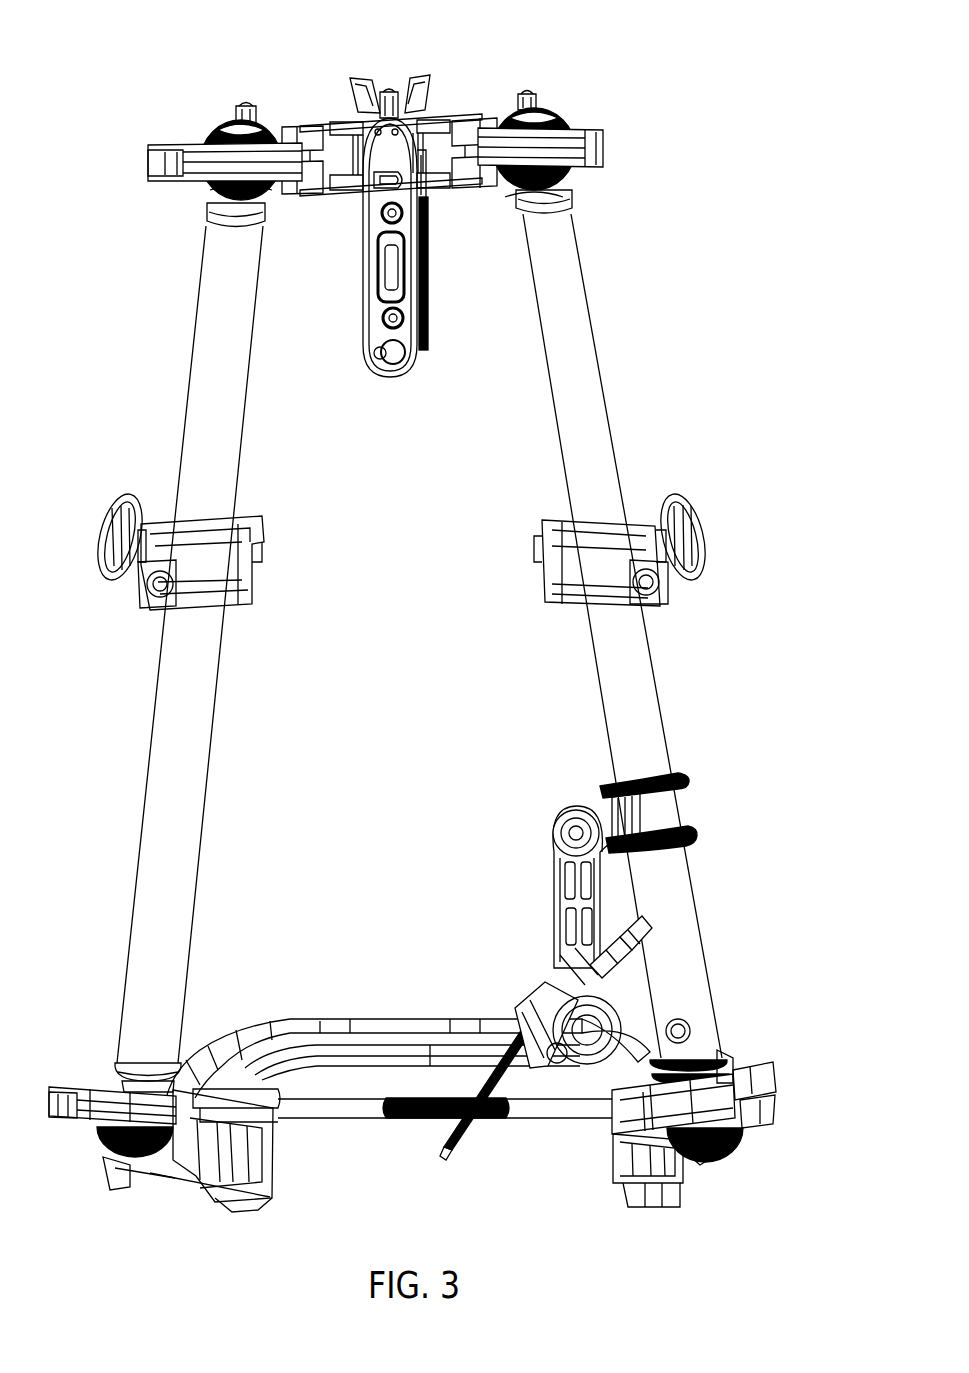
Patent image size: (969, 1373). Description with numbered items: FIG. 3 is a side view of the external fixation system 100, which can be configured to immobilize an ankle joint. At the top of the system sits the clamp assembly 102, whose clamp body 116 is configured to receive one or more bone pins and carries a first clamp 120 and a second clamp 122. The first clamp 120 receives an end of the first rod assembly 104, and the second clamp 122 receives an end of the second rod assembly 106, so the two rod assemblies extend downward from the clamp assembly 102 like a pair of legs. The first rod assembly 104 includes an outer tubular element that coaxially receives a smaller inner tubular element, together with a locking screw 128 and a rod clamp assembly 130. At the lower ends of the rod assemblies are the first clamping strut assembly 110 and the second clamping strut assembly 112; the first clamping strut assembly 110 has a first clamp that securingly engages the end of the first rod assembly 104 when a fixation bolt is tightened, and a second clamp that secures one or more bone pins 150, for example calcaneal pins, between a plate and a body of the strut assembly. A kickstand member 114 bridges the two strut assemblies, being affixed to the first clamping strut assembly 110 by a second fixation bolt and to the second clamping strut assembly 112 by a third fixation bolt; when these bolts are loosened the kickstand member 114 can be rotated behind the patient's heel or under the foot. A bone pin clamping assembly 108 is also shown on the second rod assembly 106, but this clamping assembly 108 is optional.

The external fixation system 100 is at (121, 46).
The clamp assembly 102 is at (439, 61).
The first rod assembly 104 is at (139, 690).
The second rod assembly 106 is at (672, 673).
The bone pin clamping assembly 108 is at (536, 897).
The first clamping strut assembly 110 is at (85, 1160).
The second clamping strut assembly 112 is at (741, 1185).
The kickstand member 114 is at (366, 1020).
The clamp body 116 is at (368, 264).
The first clamp 120 is at (592, 130).
The second clamp 122 is at (189, 142).
The locking screw 128 is at (250, 106).
The rod clamp assembly 130 is at (253, 594).
The bone pins 150 is at (334, 1129).